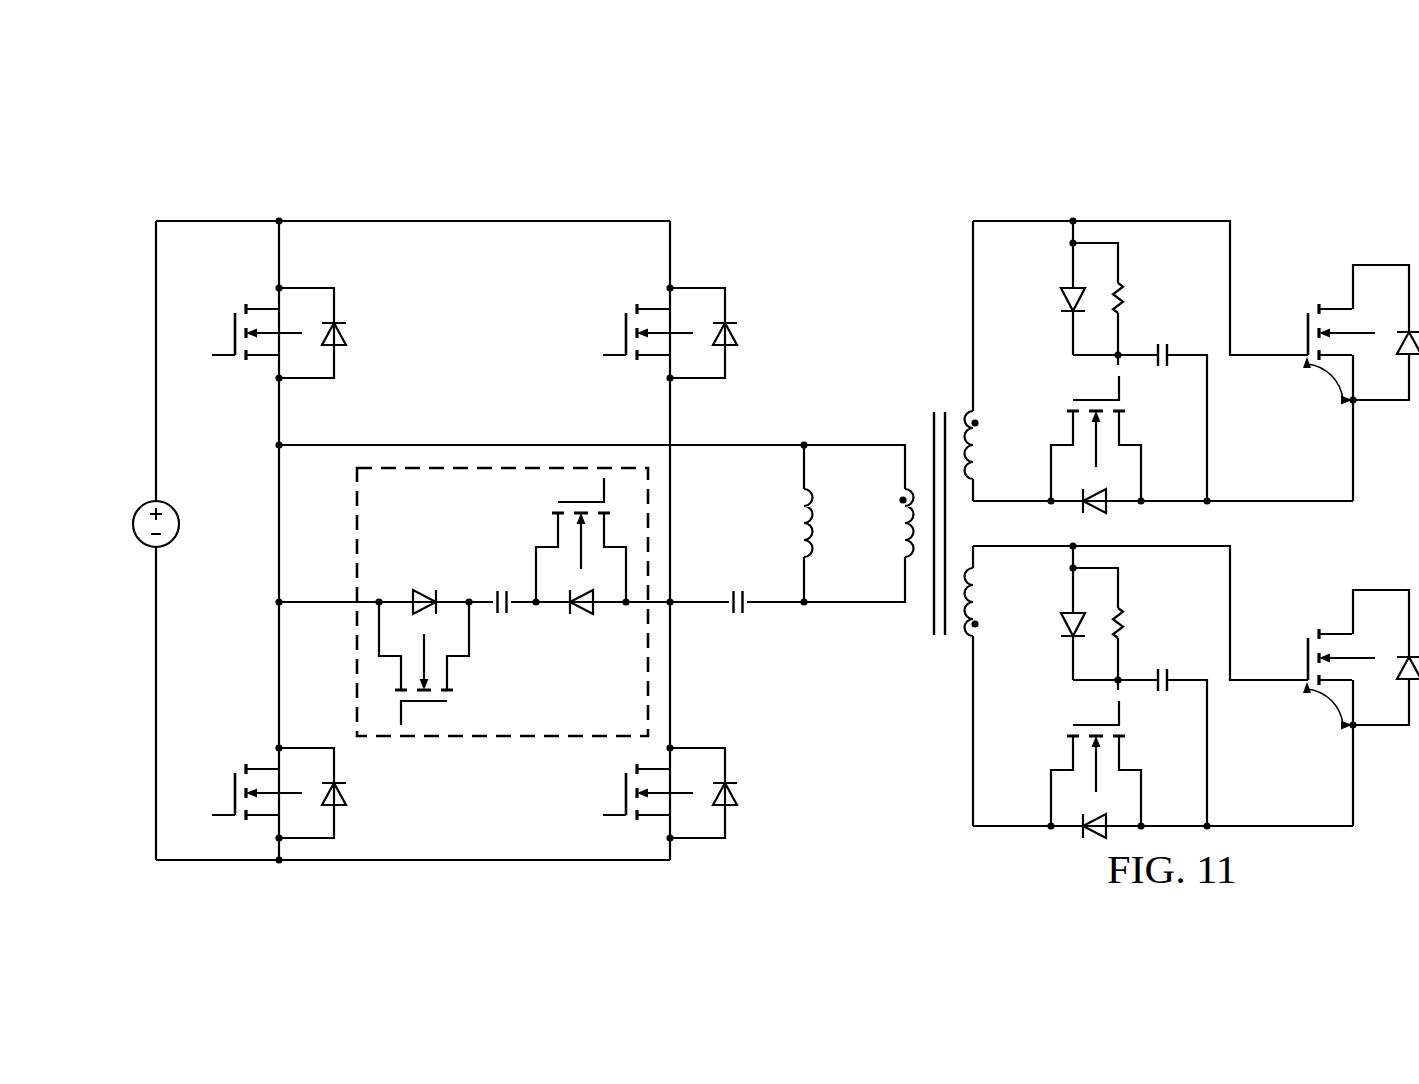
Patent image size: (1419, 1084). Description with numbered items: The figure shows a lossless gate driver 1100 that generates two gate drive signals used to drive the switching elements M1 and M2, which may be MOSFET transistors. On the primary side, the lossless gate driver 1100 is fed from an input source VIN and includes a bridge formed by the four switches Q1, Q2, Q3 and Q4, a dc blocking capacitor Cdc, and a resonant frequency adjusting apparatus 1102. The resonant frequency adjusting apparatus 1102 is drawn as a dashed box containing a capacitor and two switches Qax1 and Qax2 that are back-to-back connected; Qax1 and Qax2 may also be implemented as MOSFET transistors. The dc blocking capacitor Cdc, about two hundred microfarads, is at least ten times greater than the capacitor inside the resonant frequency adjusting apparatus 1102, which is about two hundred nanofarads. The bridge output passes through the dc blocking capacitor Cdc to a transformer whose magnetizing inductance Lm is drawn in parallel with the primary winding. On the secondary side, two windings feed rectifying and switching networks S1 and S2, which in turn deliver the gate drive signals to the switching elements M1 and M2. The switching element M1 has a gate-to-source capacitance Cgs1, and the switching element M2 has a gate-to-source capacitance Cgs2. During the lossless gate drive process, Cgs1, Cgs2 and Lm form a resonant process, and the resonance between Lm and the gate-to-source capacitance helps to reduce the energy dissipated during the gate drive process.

The lossless gate driver 1100 is at (527, 164).
The resonant frequency adjusting apparatus 1102 is at (578, 695).
The input voltage source VIN is at (135, 524).
The bridge switch Q1 is at (266, 332).
The bridge switch Q2 is at (266, 792).
The bridge switch Q3 is at (658, 332).
The bridge switch Q4 is at (658, 792).
The switch Qax1 is at (423, 643).
The switch Qax2 is at (580, 560).
The dc blocking capacitor Cdc is at (738, 588).
The magnetizing inductance Lm is at (795, 523).
The secondary switch S1 is at (1089, 444).
The secondary switch S2 is at (1089, 769).
The switching element M1 is at (1340, 383).
The switching element M2 is at (1340, 708).
The gate-to-source capacitance Cgs1 is at (1312, 389).
The gate-to-source capacitance Cgs2 is at (1312, 714).